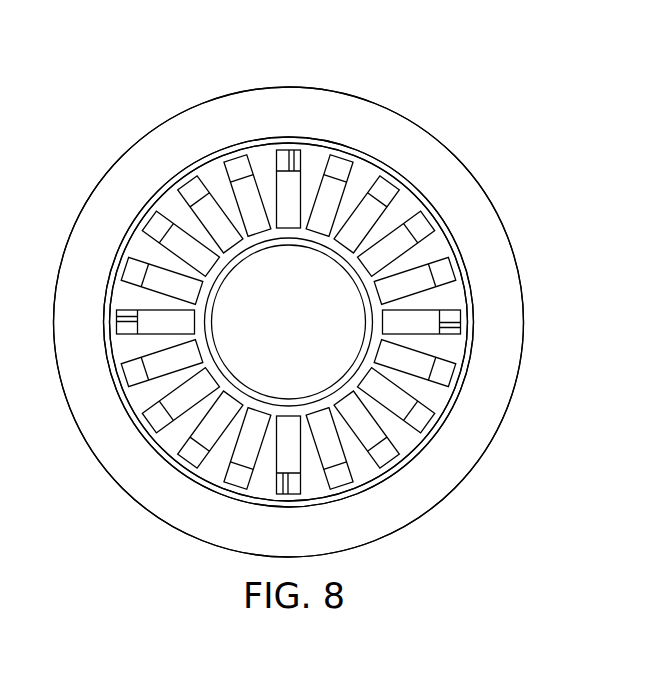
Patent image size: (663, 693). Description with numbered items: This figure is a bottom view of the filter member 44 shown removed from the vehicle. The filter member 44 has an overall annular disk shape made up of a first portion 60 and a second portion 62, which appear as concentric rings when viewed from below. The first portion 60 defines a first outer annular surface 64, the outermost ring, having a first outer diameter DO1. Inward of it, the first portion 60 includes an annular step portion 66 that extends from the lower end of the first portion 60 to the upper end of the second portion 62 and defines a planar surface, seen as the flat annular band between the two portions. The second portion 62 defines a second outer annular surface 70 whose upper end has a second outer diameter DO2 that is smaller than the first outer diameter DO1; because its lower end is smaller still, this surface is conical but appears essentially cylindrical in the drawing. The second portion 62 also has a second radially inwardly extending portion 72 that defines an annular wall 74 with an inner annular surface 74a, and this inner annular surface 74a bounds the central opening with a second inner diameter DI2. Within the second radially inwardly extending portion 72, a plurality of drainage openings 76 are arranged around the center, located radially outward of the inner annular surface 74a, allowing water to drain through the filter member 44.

The filter member 44 is at (560, 170).
The first portion 60 is at (458, 157).
The second portion 62 is at (473, 354).
The first outer annular surface 64 is at (525, 298).
The annular step portion 66 is at (433, 472).
The second outer annular surface 70 is at (467, 262).
The second radially inwardly extending portion 72 is at (460, 410).
The annular wall 74 is at (245, 395).
The inner annular surface 74a is at (315, 397).
The drainage openings 76 is at (265, 215).
The first outer diameter DO1 is at (55, 5).
The second outer diameter DO2 is at (462, 53).
The second inner diameter DI2 is at (366, 313).